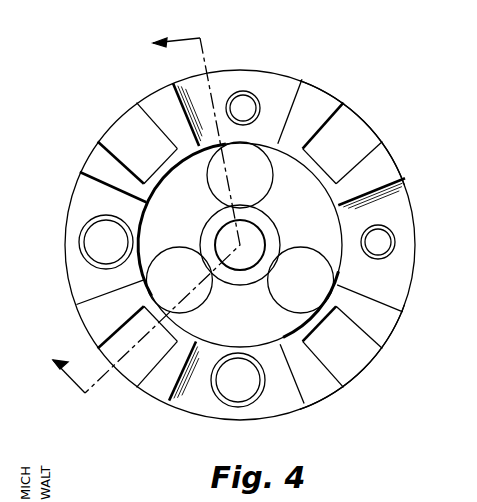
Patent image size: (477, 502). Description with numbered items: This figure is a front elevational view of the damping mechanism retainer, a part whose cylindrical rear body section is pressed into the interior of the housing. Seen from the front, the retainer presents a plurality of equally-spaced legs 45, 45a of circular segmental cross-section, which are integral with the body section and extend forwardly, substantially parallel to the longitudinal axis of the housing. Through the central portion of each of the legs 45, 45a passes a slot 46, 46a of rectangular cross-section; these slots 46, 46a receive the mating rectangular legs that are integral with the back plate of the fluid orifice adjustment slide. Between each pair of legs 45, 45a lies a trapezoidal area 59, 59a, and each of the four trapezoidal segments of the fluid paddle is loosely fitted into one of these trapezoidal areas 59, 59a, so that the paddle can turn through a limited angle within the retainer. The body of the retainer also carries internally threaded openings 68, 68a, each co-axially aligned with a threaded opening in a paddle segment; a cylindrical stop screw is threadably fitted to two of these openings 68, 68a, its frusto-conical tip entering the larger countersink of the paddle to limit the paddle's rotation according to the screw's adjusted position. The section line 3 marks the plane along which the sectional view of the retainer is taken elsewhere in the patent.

The section line 3 is at (146, 220).
The leg 45 is at (325, 390).
The leg 45a is at (390, 169).
The slot 46 is at (327, 357).
The slot 46a is at (350, 172).
The trapezoidal area 59 is at (270, 408).
The trapezoidal area 59a is at (400, 210).
The internally threaded opening 68 is at (240, 393).
The internally threaded opening 68a is at (93, 250).